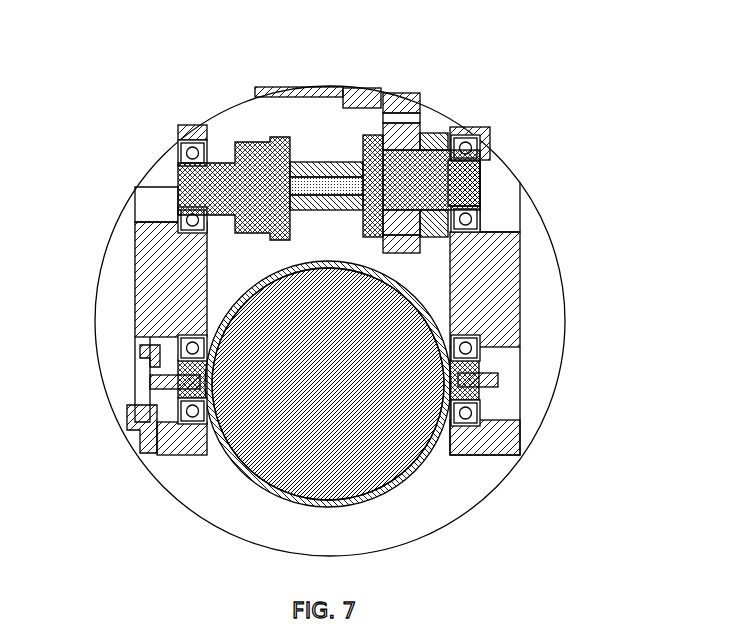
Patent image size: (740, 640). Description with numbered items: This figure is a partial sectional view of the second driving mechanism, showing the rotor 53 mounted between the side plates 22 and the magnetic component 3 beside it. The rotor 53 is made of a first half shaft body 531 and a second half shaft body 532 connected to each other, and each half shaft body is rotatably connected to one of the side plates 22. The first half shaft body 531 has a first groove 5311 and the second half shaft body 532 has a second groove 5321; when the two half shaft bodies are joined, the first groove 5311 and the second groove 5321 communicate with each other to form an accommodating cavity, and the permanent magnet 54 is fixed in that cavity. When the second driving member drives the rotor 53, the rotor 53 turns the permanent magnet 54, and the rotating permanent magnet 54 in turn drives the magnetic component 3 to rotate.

The side plate 22 is at (152, 294).
The magnetic component 3 is at (423, 480).
The rotor 53 is at (302, 130).
The first half shaft body 531 is at (240, 170).
The first groove 5311 is at (292, 187).
The second half shaft body 532 is at (365, 170).
The second groove 5321 is at (390, 148).
The permanent magnet 54 is at (477, 205).